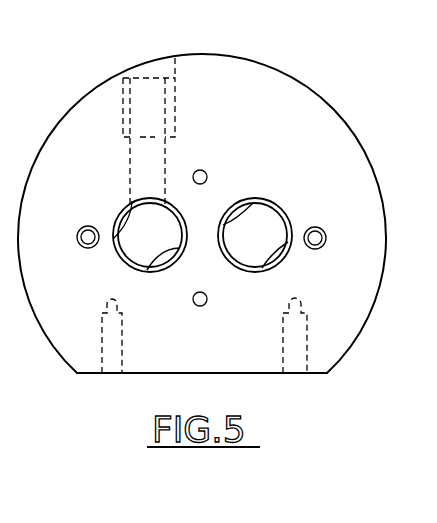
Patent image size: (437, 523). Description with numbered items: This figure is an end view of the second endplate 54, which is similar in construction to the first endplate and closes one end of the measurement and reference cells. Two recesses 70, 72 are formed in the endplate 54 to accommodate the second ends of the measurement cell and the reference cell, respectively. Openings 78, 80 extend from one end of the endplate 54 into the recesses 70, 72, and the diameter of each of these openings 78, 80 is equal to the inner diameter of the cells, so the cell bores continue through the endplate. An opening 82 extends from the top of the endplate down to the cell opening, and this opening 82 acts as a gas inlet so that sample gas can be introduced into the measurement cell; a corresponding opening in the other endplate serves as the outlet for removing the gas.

The endplate 54 is at (357, 282).
The recess 70 is at (123, 213).
The recess 72 is at (250, 203).
The opening 78 is at (148, 270).
The opening 80 is at (262, 268).
The opening 82 is at (162, 88).